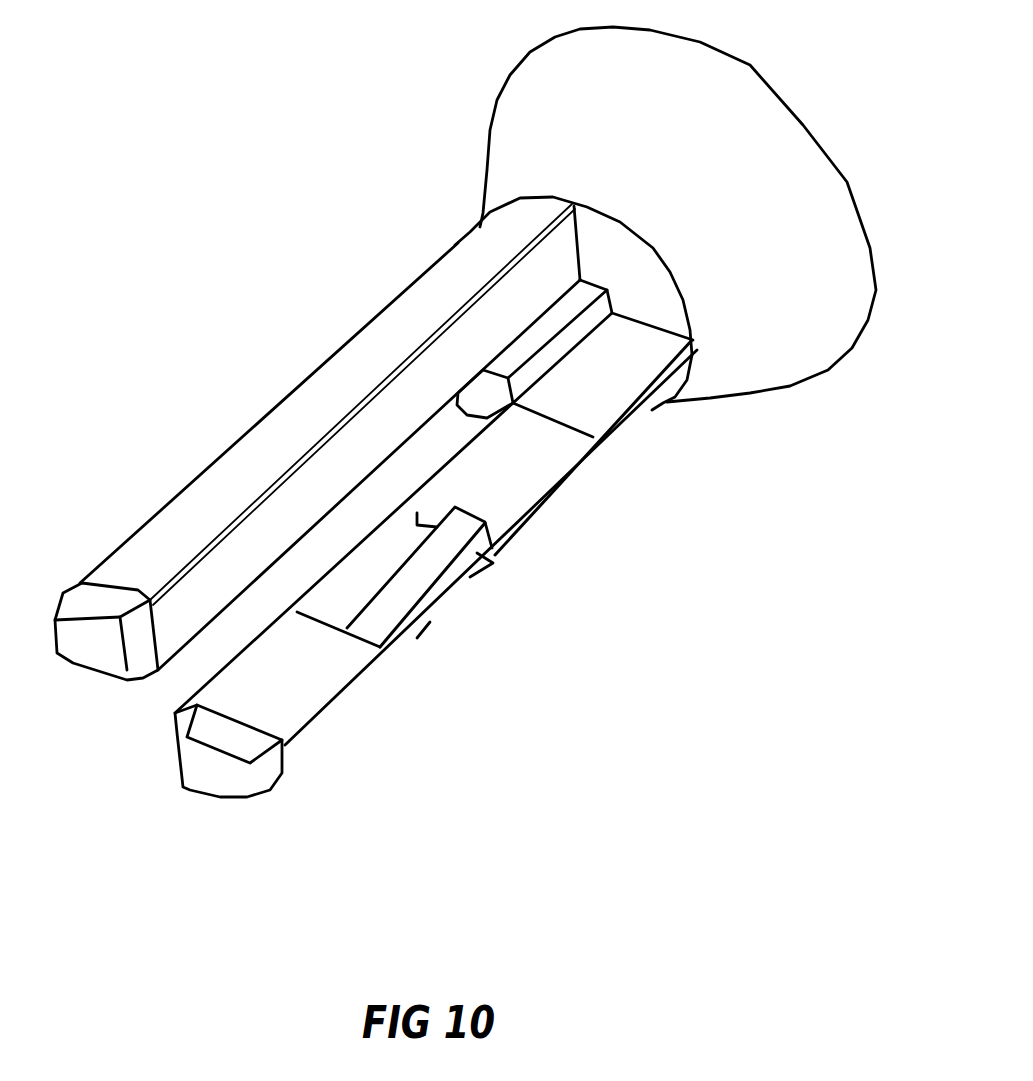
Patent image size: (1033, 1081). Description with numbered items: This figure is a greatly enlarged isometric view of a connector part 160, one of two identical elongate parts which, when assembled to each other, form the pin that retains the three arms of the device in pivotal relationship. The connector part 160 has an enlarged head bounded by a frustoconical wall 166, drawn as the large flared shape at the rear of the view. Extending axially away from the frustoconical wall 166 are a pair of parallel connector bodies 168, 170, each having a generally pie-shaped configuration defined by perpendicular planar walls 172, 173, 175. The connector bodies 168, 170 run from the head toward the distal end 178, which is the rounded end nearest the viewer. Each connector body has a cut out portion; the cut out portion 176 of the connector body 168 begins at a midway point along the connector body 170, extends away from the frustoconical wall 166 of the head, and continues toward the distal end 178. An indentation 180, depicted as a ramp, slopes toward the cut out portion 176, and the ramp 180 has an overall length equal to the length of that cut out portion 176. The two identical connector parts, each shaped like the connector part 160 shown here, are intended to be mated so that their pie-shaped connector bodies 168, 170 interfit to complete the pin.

The connector part 160 is at (428, 276).
The frustoconical wall 166 is at (513, 153).
The connector body 168 is at (615, 437).
The connector body 170 is at (393, 330).
The planar wall 172 is at (361, 437).
The planar wall 173 is at (466, 548).
The planar wall 175 is at (350, 540).
The cut out portion 176 is at (453, 600).
The distal end 178 is at (168, 732).
The indentation (ramp) 180 is at (493, 563).